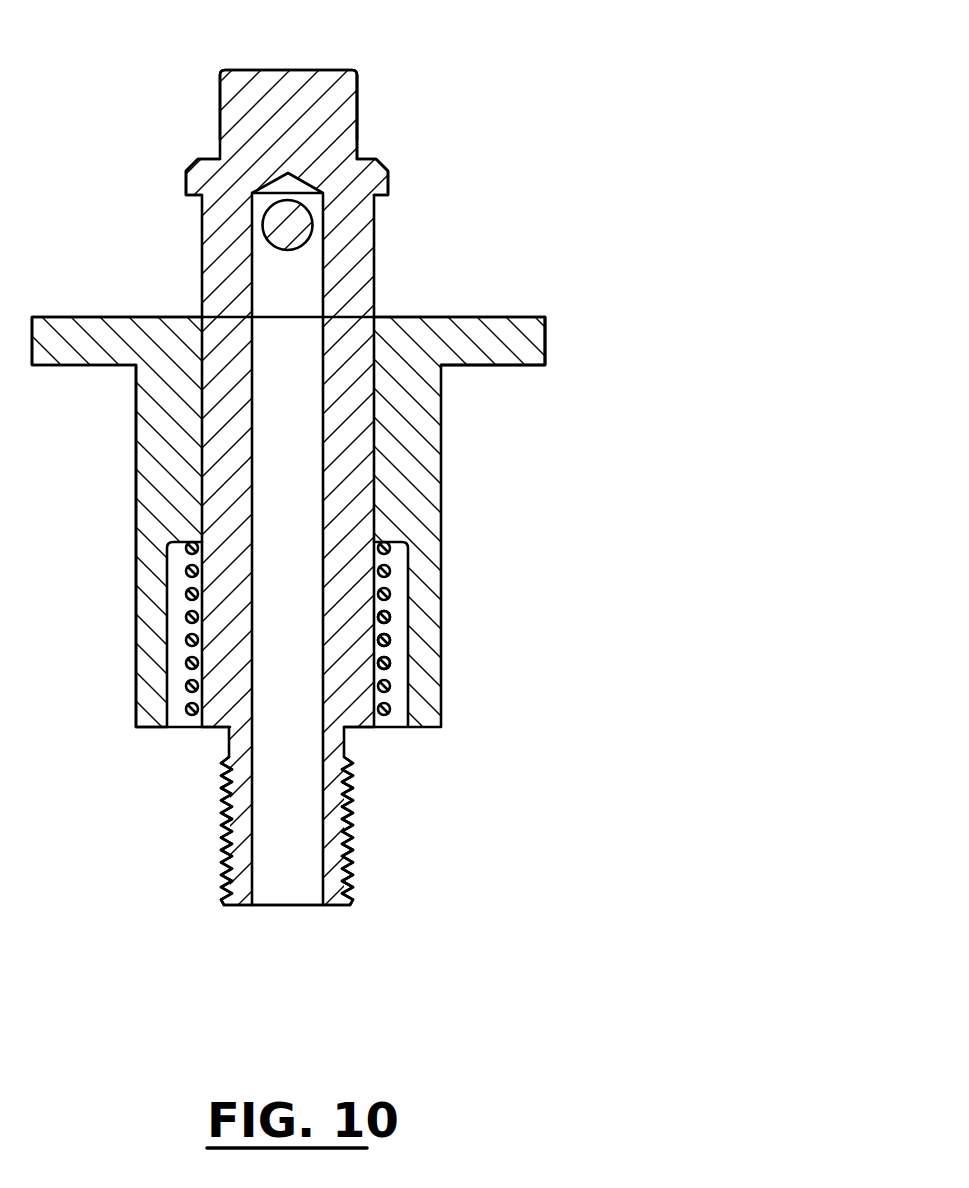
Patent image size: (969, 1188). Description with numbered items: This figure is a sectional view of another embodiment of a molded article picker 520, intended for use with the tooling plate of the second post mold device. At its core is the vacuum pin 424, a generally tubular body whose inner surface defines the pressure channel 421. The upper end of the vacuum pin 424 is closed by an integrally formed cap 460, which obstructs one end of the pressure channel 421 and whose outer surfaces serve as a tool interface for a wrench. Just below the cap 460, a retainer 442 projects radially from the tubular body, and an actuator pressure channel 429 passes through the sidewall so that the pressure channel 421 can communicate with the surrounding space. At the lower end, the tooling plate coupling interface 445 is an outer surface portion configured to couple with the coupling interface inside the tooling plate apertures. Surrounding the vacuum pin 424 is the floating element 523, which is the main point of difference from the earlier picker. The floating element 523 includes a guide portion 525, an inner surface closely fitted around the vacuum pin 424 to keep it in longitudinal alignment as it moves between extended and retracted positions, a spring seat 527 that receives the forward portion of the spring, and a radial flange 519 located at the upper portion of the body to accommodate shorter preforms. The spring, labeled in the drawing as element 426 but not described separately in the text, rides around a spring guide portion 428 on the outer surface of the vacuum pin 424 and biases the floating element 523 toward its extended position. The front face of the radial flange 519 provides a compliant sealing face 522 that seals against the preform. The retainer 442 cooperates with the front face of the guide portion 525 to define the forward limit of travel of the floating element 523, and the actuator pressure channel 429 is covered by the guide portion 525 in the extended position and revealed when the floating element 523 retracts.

The molded article picker 520 is at (656, 144).
The cap 460 is at (302, 77).
The retainer 442 is at (388, 178).
The vacuum pin 424 is at (378, 242).
The actuator pressure channel 429 is at (268, 222).
The sealing face 522 is at (488, 318).
The radial flange 519 is at (525, 345).
The pressure channel 421 is at (303, 470).
The guide portion 525 is at (160, 460).
The floating element 523 is at (464, 521).
The spring seat 527 is at (387, 558).
The spring coil 426 is at (388, 627).
The spring guide portion 428 is at (395, 672).
The tooling plate coupling interface 445 is at (348, 832).